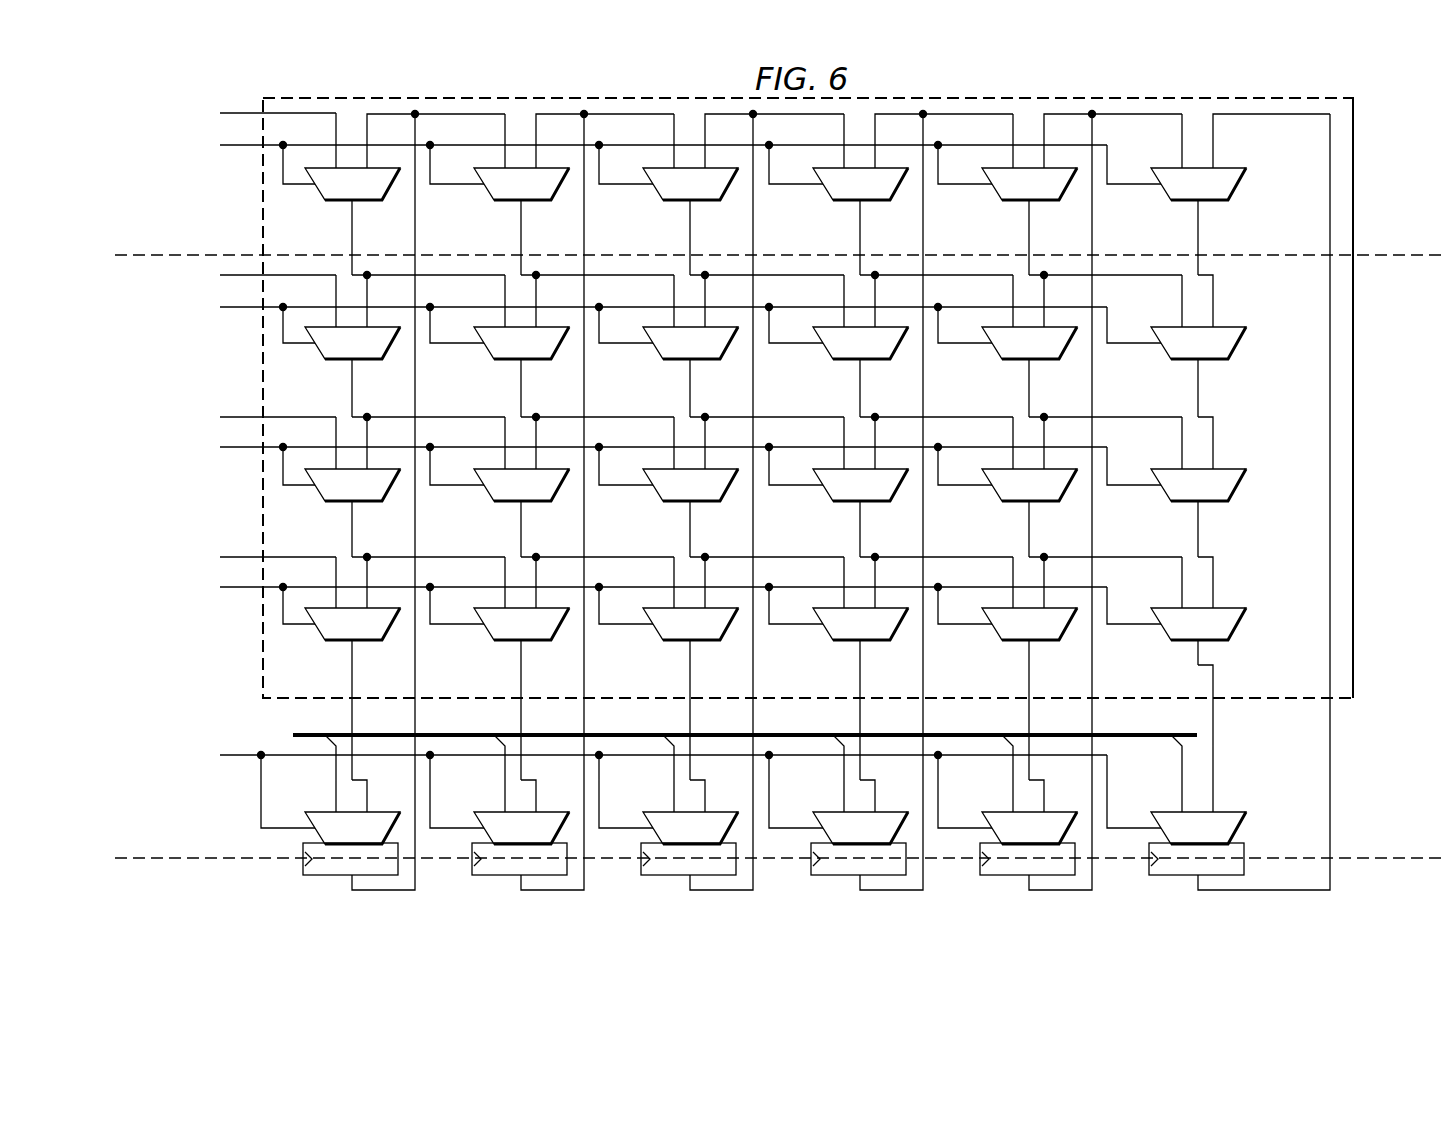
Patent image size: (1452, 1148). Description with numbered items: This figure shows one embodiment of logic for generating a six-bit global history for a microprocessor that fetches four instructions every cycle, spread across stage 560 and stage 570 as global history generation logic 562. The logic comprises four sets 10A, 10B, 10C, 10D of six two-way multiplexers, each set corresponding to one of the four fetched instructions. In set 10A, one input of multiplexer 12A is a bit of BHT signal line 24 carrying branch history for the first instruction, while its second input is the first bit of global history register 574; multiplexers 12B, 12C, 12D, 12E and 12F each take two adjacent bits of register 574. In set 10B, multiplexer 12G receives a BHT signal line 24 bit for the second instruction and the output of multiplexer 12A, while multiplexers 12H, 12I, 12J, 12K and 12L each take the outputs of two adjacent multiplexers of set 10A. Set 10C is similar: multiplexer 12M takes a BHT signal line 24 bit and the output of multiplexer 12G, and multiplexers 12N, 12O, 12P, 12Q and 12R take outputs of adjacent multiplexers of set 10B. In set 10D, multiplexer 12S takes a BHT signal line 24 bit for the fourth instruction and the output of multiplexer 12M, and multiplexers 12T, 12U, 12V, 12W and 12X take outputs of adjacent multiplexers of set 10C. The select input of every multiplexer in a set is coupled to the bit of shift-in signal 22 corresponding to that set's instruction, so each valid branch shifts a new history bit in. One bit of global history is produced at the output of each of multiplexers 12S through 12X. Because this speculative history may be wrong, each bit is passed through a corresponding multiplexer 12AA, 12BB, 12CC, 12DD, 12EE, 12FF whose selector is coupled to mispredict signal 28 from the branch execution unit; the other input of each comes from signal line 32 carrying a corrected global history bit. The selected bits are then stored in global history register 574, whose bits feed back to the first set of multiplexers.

The BHT signal line 24 is at (242, 113).
The shift-in signal 22 is at (240, 148).
The mispredict signal 28 is at (240, 758).
The signal line 32 is at (293, 735).
The set of multiplexers 10A is at (805, 193).
The set of multiplexers 10B is at (801, 345).
The set of multiplexers 10C is at (801, 486).
The set of multiplexers 10D is at (801, 667).
The multiplexer 12A is at (338, 202).
The multiplexer 12B is at (507, 202).
The multiplexer 12C is at (676, 202).
The multiplexer 12D is at (846, 202).
The multiplexer 12E is at (1015, 202).
The multiplexer 12F is at (1184, 202).
The multiplexer 12G is at (338, 361).
The multiplexer 12H is at (507, 361).
The multiplexer 12I is at (676, 361).
The multiplexer 12J is at (846, 361).
The multiplexer 12K is at (1015, 361).
The multiplexer 12L is at (1184, 361).
The multiplexer 12M is at (338, 503).
The multiplexer 12N is at (507, 503).
The multiplexer 12O is at (676, 503).
The multiplexer 12P is at (846, 503).
The multiplexer 12Q is at (1015, 503).
The multiplexer 12R is at (1184, 503).
The multiplexer 12S is at (338, 642).
The multiplexer 12T is at (507, 642).
The multiplexer 12U is at (676, 642).
The multiplexer 12V is at (846, 642).
The multiplexer 12W is at (1015, 642).
The multiplexer 12X is at (1184, 642).
The multiplexer 12AA is at (320, 808).
The multiplexer 12BB is at (489, 808).
The multiplexer 12CC is at (658, 808).
The multiplexer 12DD is at (828, 808).
The multiplexer 12EE is at (997, 808).
The multiplexer 12FF is at (1166, 808).
The stage 560 is at (1422, 213).
The global history generation logic 562 is at (1355, 344).
The stage 570 is at (1421, 606).
The global history register 574 is at (780, 519).